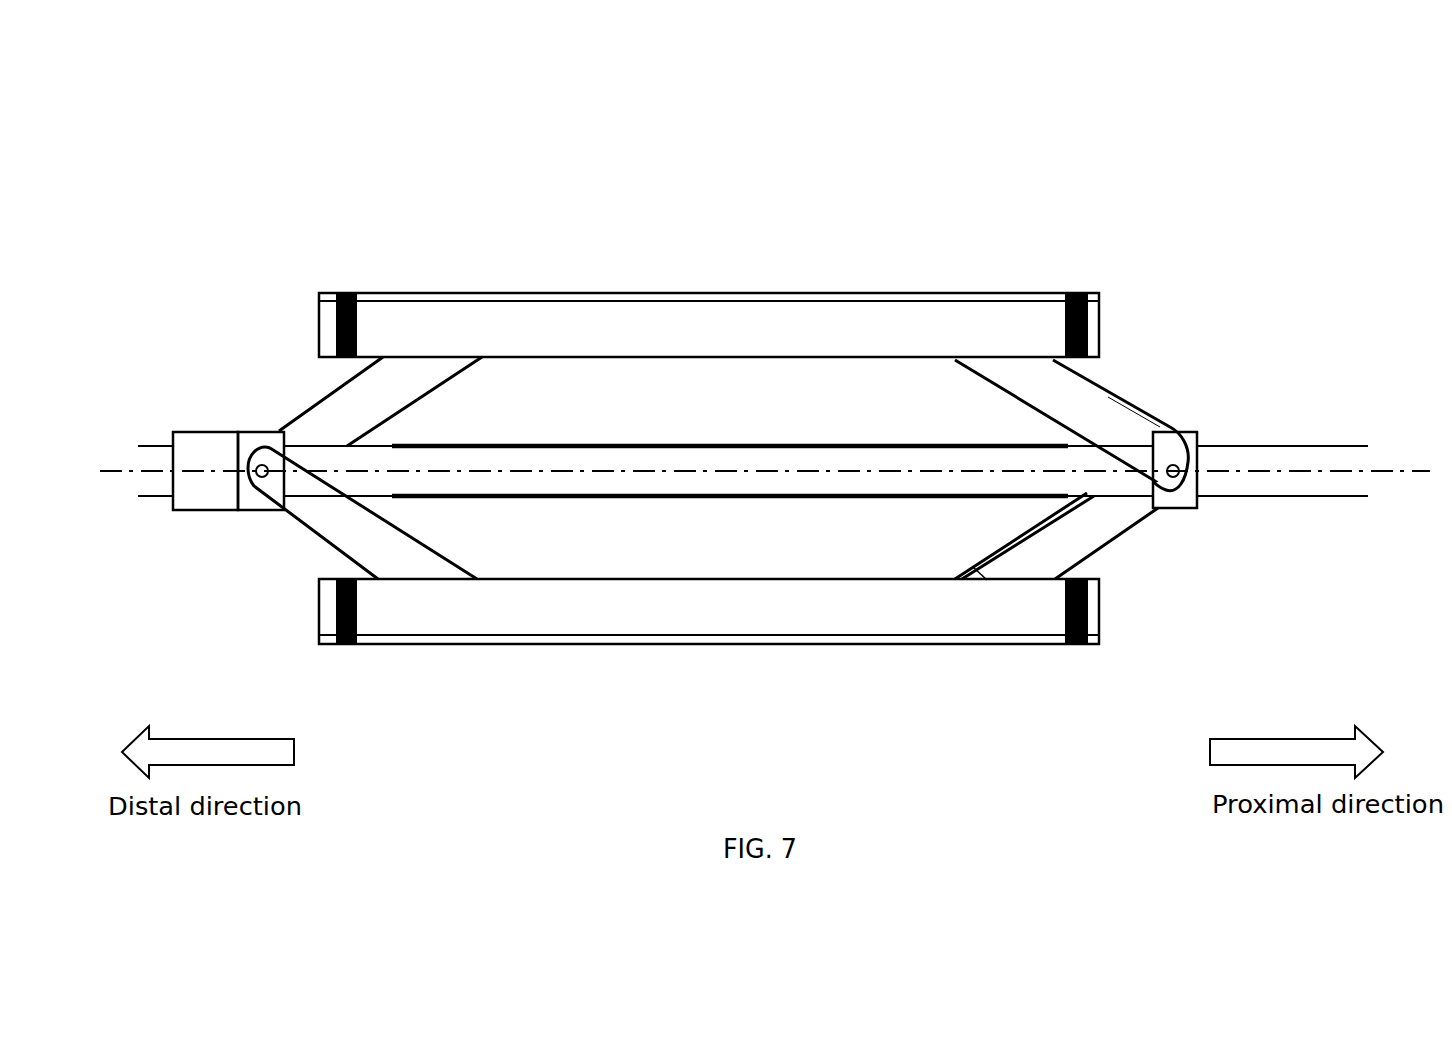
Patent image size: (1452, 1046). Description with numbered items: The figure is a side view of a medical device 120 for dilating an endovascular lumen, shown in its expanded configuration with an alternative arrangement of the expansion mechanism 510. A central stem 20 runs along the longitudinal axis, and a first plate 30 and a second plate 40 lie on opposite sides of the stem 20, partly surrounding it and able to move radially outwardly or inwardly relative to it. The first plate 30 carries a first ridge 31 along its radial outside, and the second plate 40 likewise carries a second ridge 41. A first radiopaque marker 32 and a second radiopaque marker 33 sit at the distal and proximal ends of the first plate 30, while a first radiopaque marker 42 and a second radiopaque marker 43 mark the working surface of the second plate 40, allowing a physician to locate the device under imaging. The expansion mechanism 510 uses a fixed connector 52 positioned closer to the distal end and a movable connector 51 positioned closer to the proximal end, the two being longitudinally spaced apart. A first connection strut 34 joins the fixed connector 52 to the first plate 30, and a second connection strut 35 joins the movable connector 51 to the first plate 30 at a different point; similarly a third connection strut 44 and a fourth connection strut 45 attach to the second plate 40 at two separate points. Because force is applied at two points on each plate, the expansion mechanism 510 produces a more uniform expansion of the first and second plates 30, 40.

The medical device 120 is at (548, 232).
The central stem 20 is at (1226, 432).
The first plate 30 is at (719, 288).
The first ridge 31 is at (650, 292).
The first radiopaque marker 32 is at (348, 292).
The second radiopaque marker 33 is at (1077, 292).
The first connection strut 34 is at (312, 400).
The second connection strut 35 is at (1108, 397).
The second plate 40 is at (852, 654).
The second ridge 41 is at (597, 645).
The first radiopaque marker 42 is at (353, 645).
The second radiopaque marker 43 is at (1072, 645).
The third connection strut 44 is at (308, 537).
The fourth connection strut 45 is at (1117, 540).
The movable connector 51 is at (1180, 430).
The expansion mechanism 510 is at (1148, 364).
The fixed connector 52 is at (260, 432).